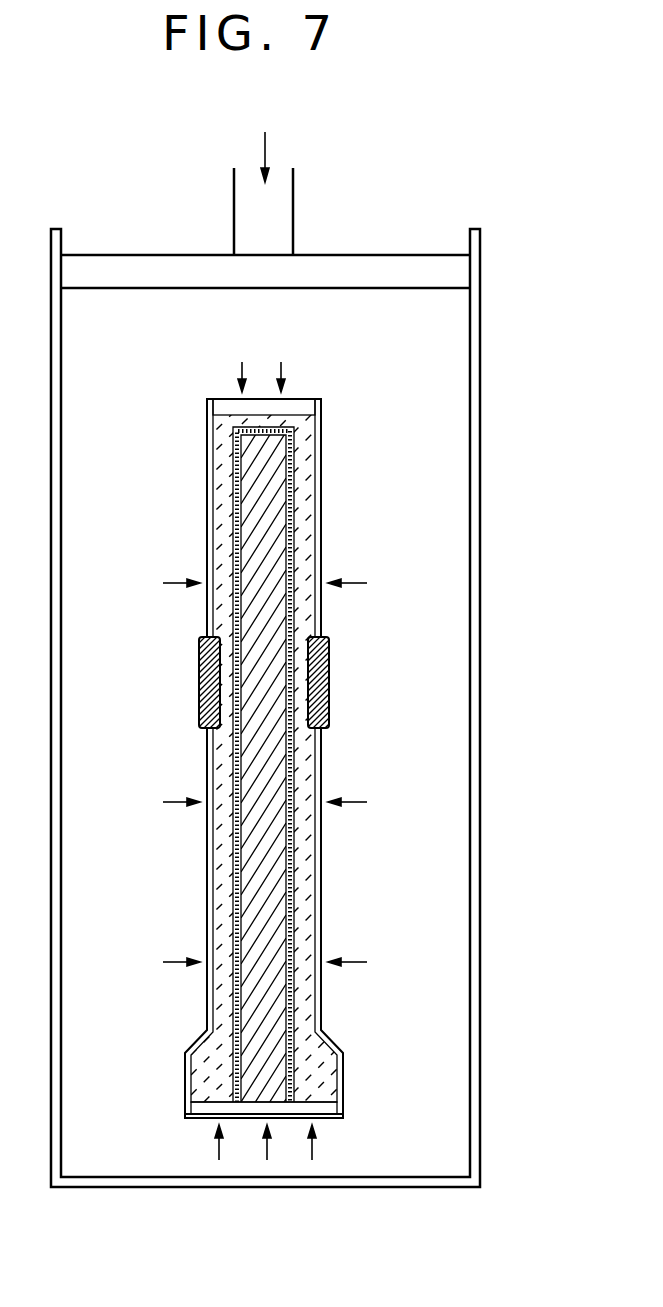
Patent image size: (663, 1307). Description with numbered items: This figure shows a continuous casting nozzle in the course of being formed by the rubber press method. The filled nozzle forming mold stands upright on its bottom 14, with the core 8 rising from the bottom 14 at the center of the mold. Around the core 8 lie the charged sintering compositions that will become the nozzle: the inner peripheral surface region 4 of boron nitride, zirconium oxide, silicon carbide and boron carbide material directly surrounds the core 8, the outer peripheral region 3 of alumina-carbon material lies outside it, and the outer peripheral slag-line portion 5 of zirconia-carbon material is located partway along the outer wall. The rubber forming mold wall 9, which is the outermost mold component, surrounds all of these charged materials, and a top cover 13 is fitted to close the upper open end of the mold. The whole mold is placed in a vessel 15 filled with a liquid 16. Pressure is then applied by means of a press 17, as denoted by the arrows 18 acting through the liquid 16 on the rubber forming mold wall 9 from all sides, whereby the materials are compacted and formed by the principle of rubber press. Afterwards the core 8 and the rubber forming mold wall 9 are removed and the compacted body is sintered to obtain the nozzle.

The outer peripheral region 3 is at (307, 493).
The inner peripheral surface region 4 is at (290, 553).
The outer peripheral slag-line portion 5 is at (328, 683).
The core 8 is at (267, 903).
The rubber forming mold wall 9 is at (208, 866).
The top cover 13 is at (298, 408).
The bottom 14 is at (330, 1108).
The vessel 15 is at (481, 443).
The liquid 16 is at (452, 736).
The press 17 is at (293, 200).
The arrows 18 is at (265, 143).